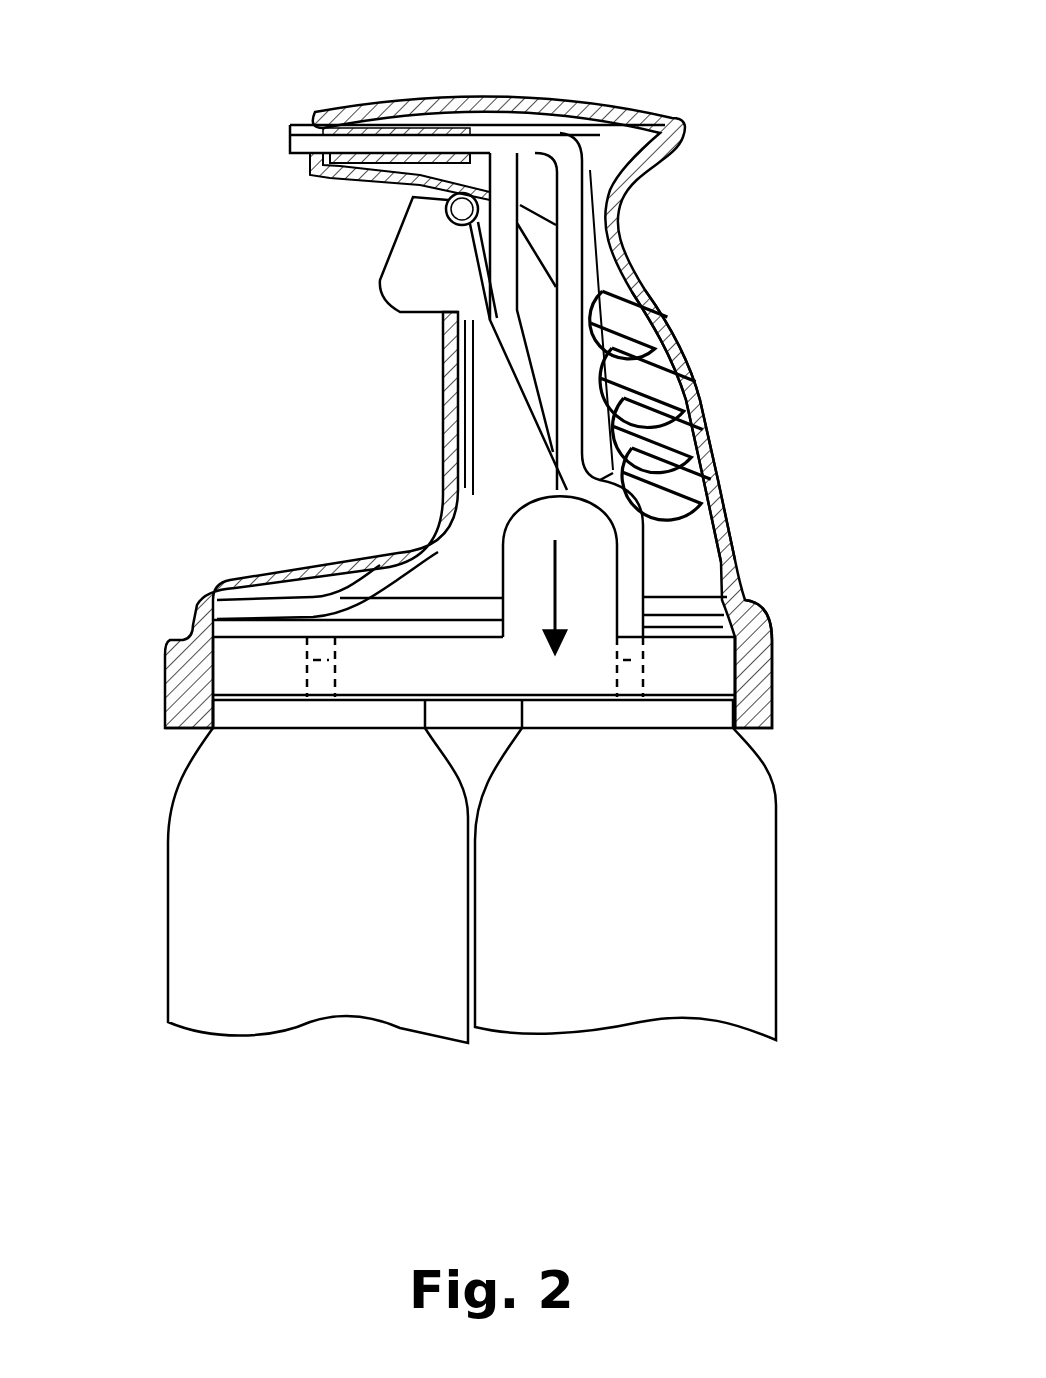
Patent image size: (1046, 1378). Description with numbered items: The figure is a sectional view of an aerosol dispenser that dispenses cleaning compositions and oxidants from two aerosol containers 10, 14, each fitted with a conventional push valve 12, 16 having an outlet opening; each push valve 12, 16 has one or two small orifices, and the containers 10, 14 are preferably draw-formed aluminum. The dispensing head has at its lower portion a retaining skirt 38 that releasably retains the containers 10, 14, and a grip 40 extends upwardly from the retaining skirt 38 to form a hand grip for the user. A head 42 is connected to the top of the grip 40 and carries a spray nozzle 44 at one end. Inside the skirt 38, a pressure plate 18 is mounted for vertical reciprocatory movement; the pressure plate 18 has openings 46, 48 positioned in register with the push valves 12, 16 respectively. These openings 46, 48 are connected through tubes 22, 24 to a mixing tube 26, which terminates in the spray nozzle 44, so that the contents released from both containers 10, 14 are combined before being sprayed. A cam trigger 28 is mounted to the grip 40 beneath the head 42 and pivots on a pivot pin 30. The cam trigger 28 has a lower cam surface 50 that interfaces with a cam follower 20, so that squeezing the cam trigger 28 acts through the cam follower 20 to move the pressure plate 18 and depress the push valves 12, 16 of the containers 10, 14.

The aerosol container 10 is at (188, 807).
The push valve 12 is at (630, 685).
The aerosol container 14 is at (740, 827).
The push valve 16 is at (317, 680).
The pressure plate 18 is at (680, 645).
The cam follower 20 is at (573, 530).
The tube 22 is at (567, 273).
The tube 24 is at (503, 200).
The mixing tube 26 is at (380, 143).
The cam trigger 28 is at (390, 290).
The pivot pin 30 is at (457, 205).
The retaining skirt 38 is at (773, 643).
The grip 40 is at (700, 300).
The head 42 is at (520, 97).
The spray nozzle 44 is at (288, 128).
The opening 46 is at (633, 645).
The opening 48 is at (317, 647).
The lower cam surface 50 is at (440, 530).